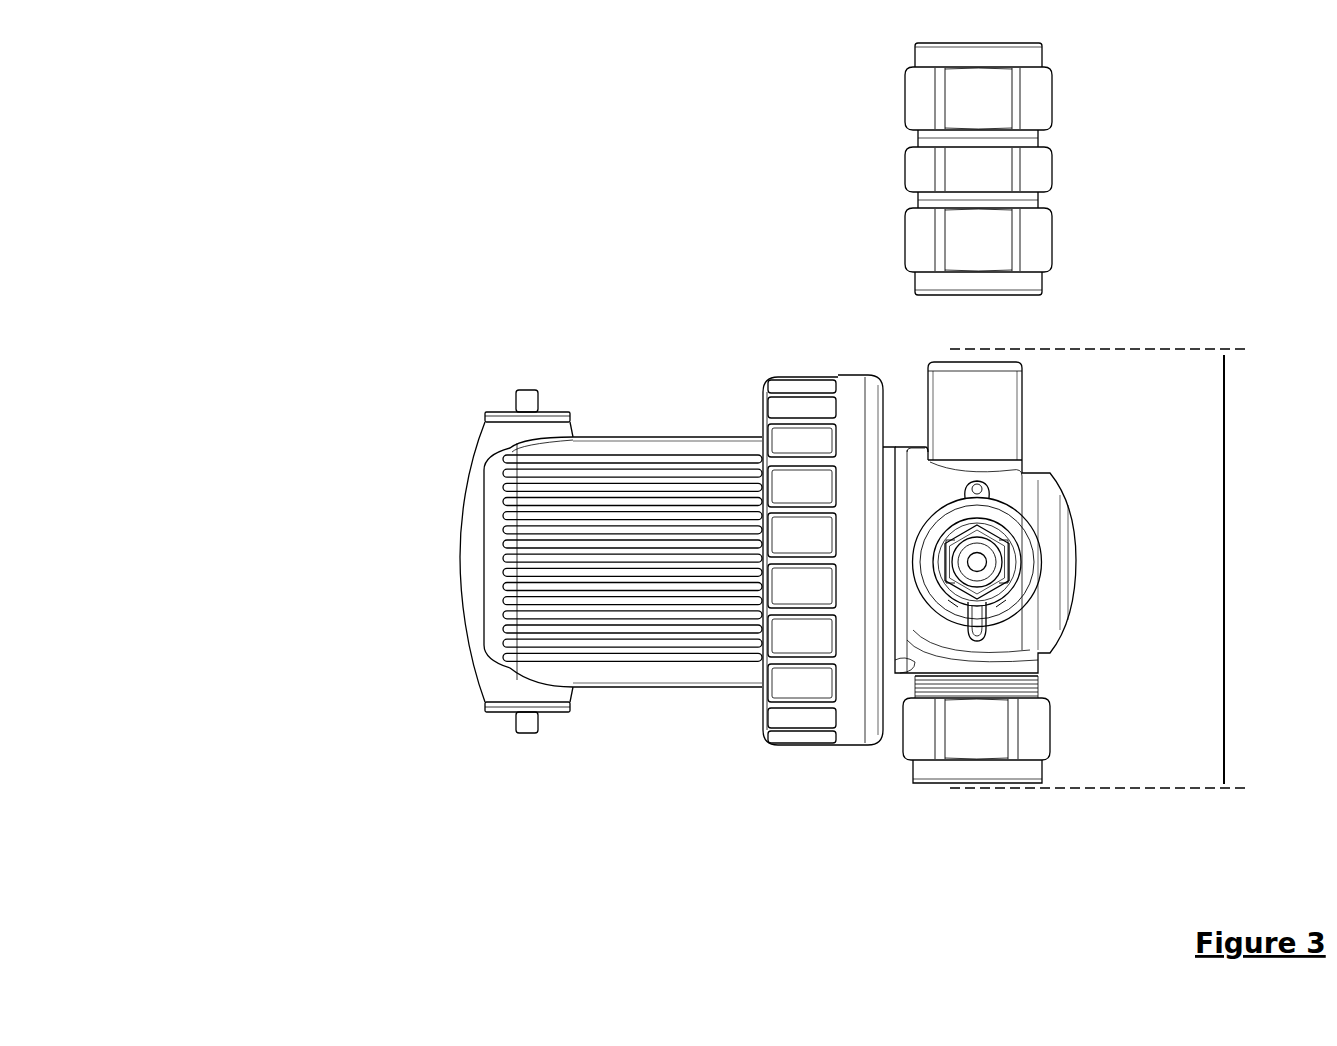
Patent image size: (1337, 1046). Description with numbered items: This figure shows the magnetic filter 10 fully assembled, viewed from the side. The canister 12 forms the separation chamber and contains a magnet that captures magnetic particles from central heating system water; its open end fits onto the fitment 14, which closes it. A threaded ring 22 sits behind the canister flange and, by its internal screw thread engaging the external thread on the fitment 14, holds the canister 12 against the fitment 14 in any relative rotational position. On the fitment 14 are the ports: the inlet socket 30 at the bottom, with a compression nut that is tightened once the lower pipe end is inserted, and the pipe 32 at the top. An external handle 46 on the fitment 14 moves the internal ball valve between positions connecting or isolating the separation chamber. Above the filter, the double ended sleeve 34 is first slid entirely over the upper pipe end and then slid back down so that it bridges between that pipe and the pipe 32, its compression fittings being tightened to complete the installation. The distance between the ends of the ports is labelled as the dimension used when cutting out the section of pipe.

The magnetic filter 10 is at (221, 174).
The canister 12 is at (636, 524).
The fitment 14 is at (878, 709).
The threaded ring 22 is at (786, 449).
The inlet socket 30 is at (997, 730).
The outlet pipe 32 is at (974, 418).
The double ended sleeve 34 is at (1032, 173).
The external handle 46 is at (1004, 563).